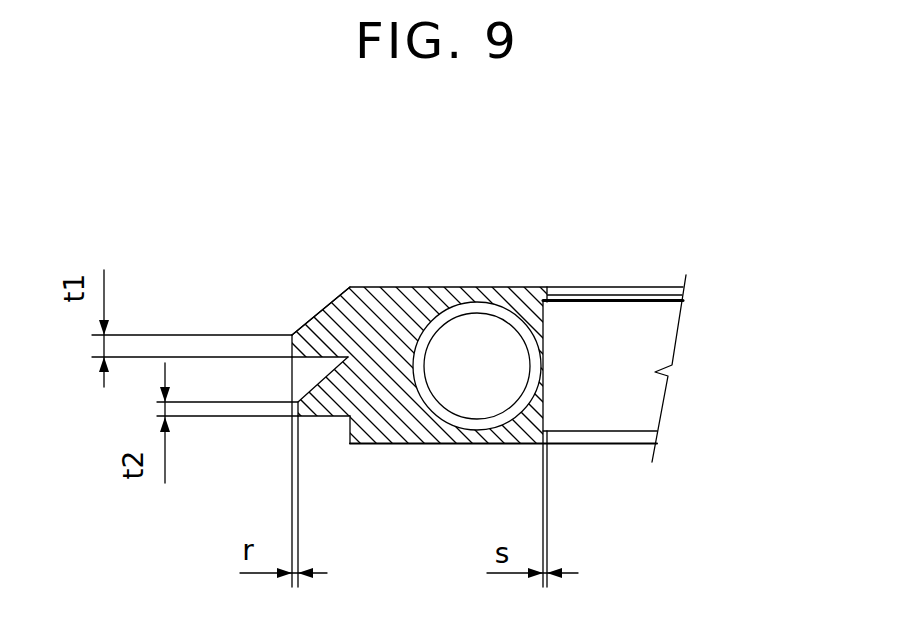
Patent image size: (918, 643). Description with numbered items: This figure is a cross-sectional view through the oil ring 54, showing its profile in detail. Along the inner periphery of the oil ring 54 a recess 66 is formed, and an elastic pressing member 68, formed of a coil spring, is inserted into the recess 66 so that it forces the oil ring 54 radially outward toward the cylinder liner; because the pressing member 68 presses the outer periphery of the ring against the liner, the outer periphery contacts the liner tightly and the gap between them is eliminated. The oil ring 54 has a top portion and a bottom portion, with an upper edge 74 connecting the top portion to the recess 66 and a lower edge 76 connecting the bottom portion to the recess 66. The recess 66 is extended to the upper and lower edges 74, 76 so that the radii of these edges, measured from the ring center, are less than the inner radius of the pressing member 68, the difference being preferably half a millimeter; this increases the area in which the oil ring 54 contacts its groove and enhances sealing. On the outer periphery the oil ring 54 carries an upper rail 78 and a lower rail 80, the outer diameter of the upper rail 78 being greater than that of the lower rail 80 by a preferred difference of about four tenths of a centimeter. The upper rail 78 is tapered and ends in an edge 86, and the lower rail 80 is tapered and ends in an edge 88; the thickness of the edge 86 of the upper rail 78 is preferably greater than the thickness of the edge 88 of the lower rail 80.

The oil ring 54 is at (436, 274).
The recess 66 is at (540, 302).
The pressing member 68 is at (538, 376).
The upper edge 74 is at (590, 295).
The lower edge 76 is at (550, 433).
The upper rail 78 is at (318, 314).
The lower rail 80 is at (330, 414).
The edge 86 is at (270, 350).
The edge 88 is at (283, 410).